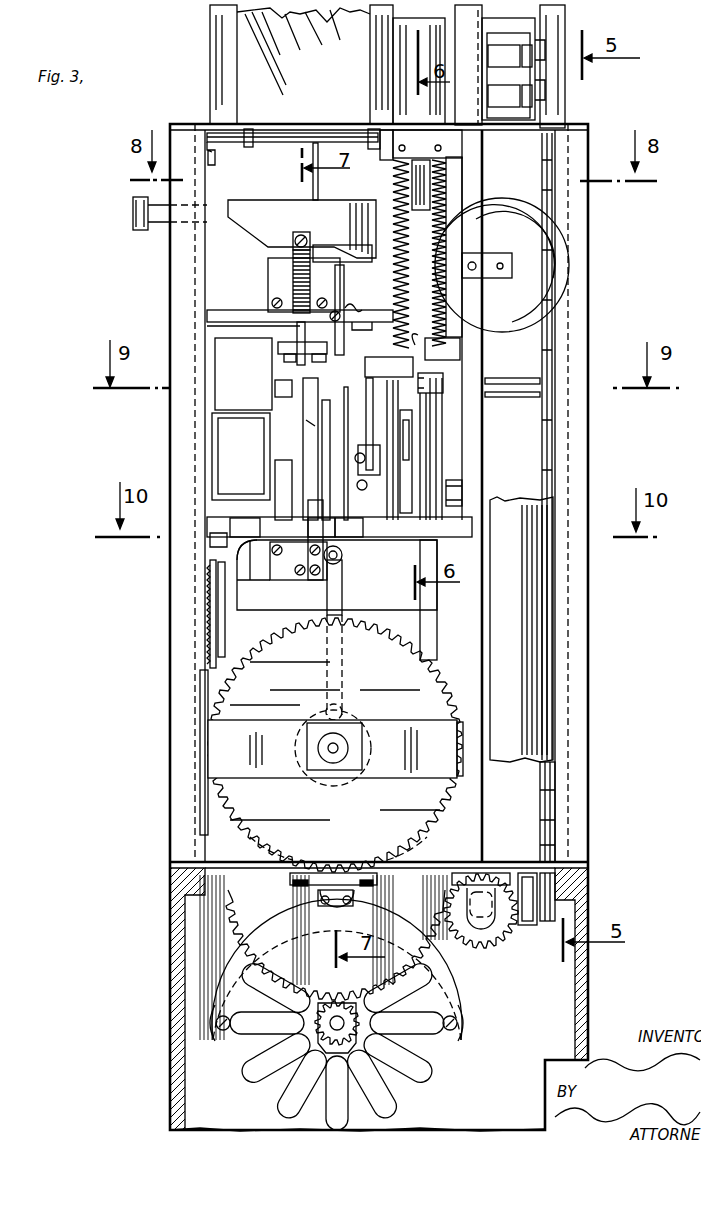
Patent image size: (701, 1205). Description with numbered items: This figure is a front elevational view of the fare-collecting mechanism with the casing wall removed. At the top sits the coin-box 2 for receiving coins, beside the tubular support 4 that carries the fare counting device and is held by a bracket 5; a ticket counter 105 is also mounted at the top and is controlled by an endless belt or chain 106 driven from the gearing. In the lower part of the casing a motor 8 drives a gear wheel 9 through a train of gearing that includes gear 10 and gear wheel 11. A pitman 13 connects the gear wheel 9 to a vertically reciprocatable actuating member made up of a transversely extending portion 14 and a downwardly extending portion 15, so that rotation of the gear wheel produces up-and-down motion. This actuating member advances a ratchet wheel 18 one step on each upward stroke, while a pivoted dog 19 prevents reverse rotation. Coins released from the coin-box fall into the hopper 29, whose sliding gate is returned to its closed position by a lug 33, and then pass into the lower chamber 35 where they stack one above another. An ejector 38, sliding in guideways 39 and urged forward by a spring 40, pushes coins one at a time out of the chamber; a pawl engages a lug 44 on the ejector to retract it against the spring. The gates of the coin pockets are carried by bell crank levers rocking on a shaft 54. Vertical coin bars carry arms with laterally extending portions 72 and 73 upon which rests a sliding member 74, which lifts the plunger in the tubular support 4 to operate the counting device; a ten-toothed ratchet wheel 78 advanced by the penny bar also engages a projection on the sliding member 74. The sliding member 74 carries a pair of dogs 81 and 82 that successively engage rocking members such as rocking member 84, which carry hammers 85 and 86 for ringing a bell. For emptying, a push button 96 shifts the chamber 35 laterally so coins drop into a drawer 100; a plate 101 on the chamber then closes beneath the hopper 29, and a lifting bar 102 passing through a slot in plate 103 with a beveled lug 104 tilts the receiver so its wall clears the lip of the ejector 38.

The coin-box 2 is at (220, 52).
The tubular support 4 is at (410, 57).
The bracket 5 is at (408, 254).
The motor 8 is at (452, 995).
The gear wheel 9 is at (430, 797).
The gear 10 is at (317, 1043).
The gear wheel 11 is at (253, 957).
The pitman 13 is at (313, 617).
The transversely extending portion 14 is at (260, 588).
The downwardly extending portion 15 is at (353, 615).
The ratchet wheel 18 is at (238, 657).
The dog 19 is at (225, 548).
The hopper 29 is at (262, 197).
The lug 33 is at (327, 360).
The lower chamber 35 is at (278, 281).
The ejector 38 is at (307, 352).
The guideways 39 is at (277, 347).
The spring 40 is at (302, 229).
The lug 44 is at (295, 362).
The shaft 54 is at (515, 397).
The laterally extending portion 72 is at (410, 418).
The laterally extending portion 73 is at (433, 400).
The sliding member 74 is at (418, 342).
The ratchet wheel 78 is at (408, 473).
The dog 81 is at (389, 367).
The dog 82 is at (433, 385).
The rocking member 84 is at (458, 350).
The hammer 85 is at (373, 477).
The hammer 86 is at (463, 493).
The push button 96 is at (133, 213).
The drawer 100 is at (242, 419).
The plate 101 is at (343, 262).
The lifting bar 102 is at (384, 308).
The plate 103 is at (338, 294).
The beveled lug 104 is at (300, 330).
The ticket counter 105 is at (555, 28).
The endless belt or chain 106 is at (545, 827).